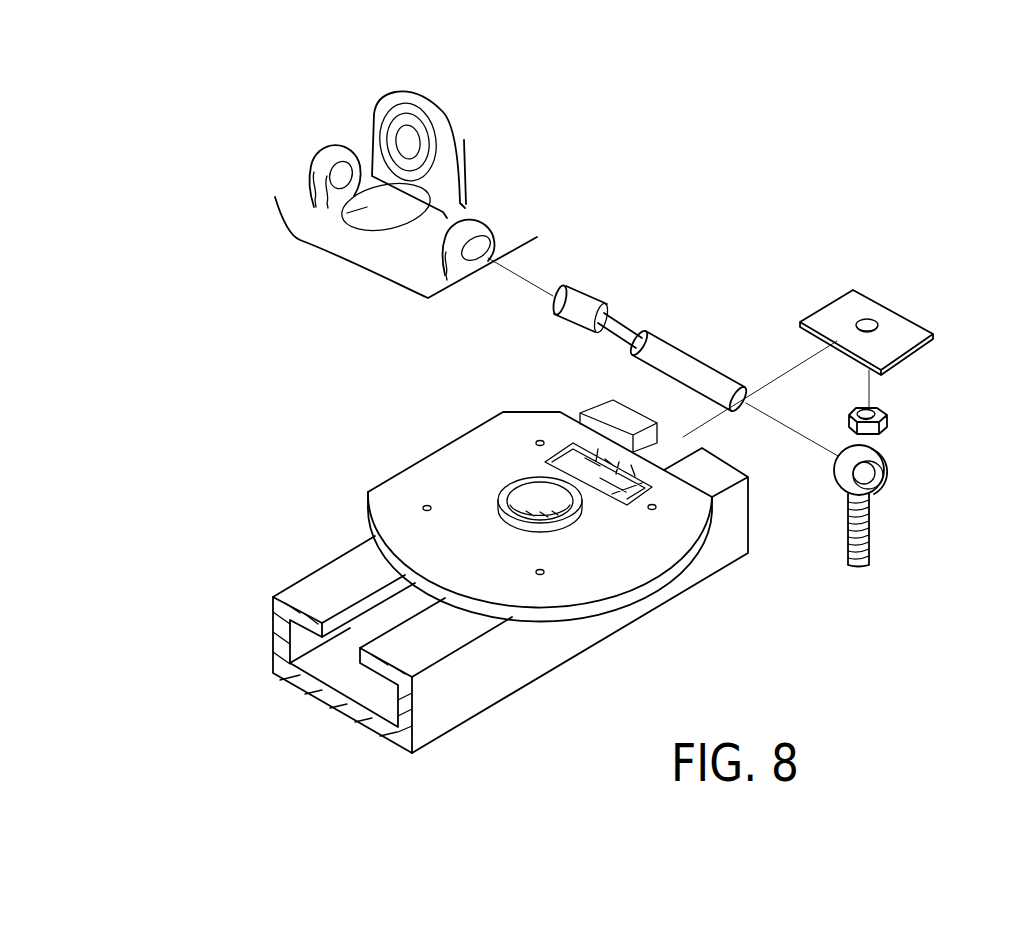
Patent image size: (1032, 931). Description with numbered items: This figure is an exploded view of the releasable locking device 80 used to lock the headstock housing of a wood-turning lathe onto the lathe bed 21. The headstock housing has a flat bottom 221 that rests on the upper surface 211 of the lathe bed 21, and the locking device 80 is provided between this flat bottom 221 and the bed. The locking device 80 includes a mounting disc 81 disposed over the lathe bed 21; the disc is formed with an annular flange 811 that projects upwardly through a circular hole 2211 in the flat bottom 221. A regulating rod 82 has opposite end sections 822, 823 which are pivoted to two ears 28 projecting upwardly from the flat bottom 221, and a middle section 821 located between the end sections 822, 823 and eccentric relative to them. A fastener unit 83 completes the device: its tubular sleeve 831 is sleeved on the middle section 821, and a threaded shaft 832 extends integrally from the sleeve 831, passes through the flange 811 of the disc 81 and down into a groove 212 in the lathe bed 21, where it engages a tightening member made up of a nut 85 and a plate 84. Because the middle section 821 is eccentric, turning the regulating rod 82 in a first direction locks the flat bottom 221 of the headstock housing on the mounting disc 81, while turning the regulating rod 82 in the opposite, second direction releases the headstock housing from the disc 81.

The lathe bed 21 is at (439, 641).
The upper surface 211 is at (323, 593).
The groove 212 is at (350, 641).
The ears 28 is at (323, 155).
The flat bottom 221 is at (359, 194).
The circular hole 2211 is at (365, 208).
The releasable locking device 80 is at (475, 510).
The mounting disc 81 is at (398, 491).
The annular flange 811 is at (513, 488).
The regulating rod 82 is at (624, 339).
The middle section 821 is at (613, 336).
The end section 822 is at (552, 307).
The end section 823 is at (678, 381).
The fastener unit 83 is at (904, 534).
The tubular sleeve 831 is at (885, 466).
The threaded shaft 832 is at (869, 519).
The plate 84 is at (874, 311).
The nut 85 is at (887, 413).